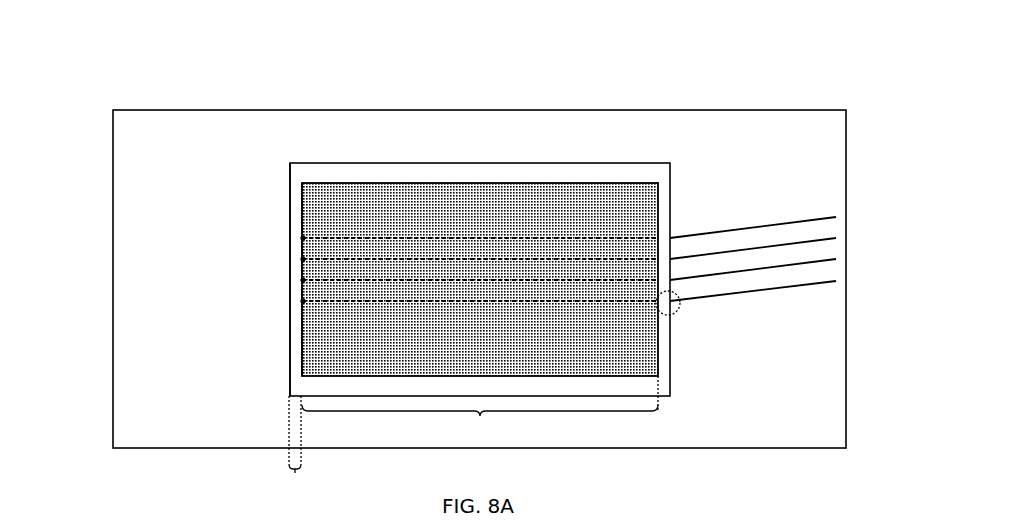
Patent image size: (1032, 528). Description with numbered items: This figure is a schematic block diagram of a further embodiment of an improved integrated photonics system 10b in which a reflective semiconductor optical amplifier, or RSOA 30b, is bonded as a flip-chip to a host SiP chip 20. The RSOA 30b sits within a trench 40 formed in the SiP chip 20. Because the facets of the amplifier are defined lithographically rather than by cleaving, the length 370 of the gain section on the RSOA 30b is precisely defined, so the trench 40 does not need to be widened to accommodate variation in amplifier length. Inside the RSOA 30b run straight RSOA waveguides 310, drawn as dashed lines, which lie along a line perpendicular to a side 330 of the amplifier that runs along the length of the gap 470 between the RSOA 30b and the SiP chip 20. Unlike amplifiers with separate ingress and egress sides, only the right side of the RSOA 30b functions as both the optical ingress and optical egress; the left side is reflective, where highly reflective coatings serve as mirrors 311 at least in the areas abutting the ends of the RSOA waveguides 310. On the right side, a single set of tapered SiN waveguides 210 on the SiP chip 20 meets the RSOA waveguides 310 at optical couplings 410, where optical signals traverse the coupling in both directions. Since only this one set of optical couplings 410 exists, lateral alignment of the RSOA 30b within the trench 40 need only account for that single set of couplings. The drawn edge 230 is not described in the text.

The improved integrated photonics system 10b is at (117, 62).
The SiP chip 20 is at (256, 110).
The reflective semiconductor optical amplifier 30b is at (432, 183).
The trench 40 is at (607, 386).
The SiN waveguides 210 is at (828, 238).
The frame edge 230 is at (290, 218).
The RSOA waveguides 310 is at (583, 258).
The mirrors 311 is at (302, 238).
The side of the SOA 330 is at (302, 190).
The length of the gain section 370 is at (480, 410).
The optical couplings 410 is at (680, 308).
The gap 470 is at (296, 449).